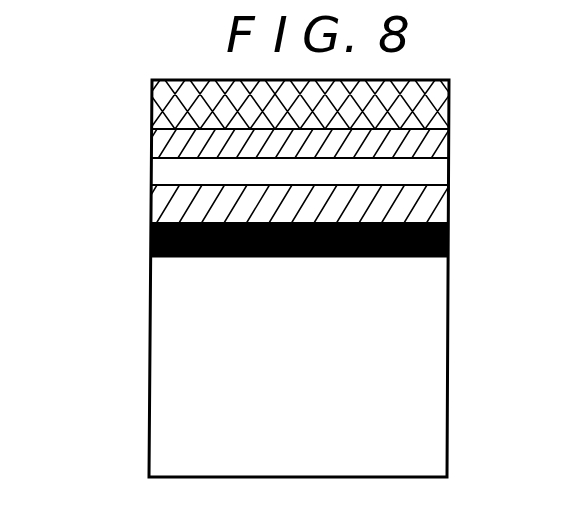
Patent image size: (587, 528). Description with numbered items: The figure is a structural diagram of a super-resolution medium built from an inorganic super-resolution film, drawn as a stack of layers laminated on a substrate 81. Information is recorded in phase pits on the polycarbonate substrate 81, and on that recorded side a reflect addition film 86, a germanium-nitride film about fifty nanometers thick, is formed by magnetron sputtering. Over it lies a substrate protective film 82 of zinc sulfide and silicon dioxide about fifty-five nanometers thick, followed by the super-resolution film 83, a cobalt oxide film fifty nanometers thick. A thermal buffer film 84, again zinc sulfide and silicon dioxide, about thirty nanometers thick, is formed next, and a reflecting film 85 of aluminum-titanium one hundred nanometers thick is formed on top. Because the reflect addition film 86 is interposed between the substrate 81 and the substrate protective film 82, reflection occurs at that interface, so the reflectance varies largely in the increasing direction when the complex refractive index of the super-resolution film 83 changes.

The substrate 81 is at (158, 286).
The substrate protective film 82 is at (161, 206).
The super-resolution film 83 is at (161, 172).
The thermal buffer film 84 is at (161, 144).
The reflecting film 85 is at (161, 107).
The reflect addition film 86 is at (450, 242).